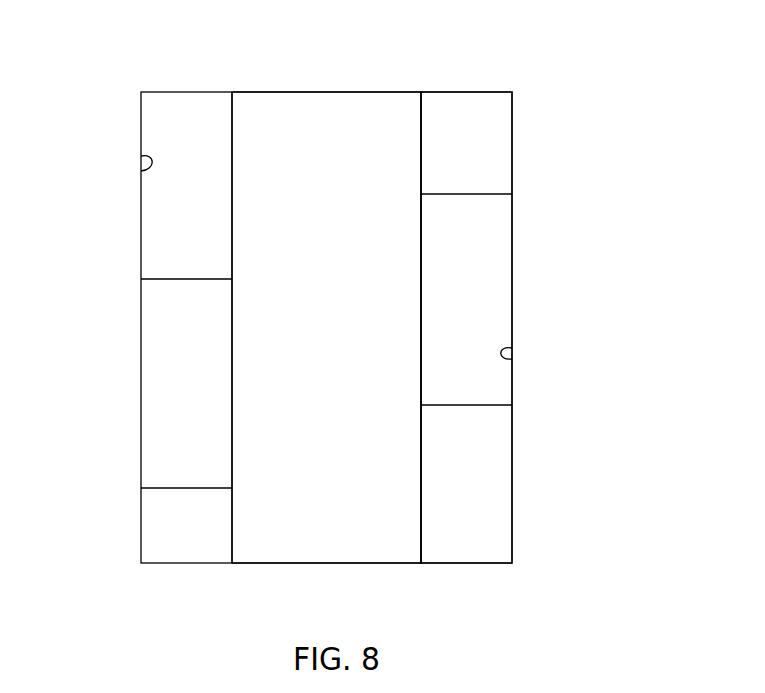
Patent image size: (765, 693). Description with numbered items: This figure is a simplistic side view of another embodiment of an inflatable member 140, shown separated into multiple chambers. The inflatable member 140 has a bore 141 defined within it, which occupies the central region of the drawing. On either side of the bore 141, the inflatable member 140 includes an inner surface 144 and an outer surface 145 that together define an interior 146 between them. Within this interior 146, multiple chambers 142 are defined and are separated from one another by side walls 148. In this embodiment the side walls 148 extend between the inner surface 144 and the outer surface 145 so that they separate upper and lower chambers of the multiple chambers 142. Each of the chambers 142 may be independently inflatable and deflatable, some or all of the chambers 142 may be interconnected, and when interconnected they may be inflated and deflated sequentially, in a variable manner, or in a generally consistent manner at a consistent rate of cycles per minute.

The inflatable member 140 is at (512, 298).
The bore 141 is at (318, 137).
The multiple chambers 142 is at (488, 169).
The inner surface 144 is at (421, 353).
The outer surface 145 is at (512, 466).
The interior 146 is at (141, 171).
The side walls 148 is at (192, 279).